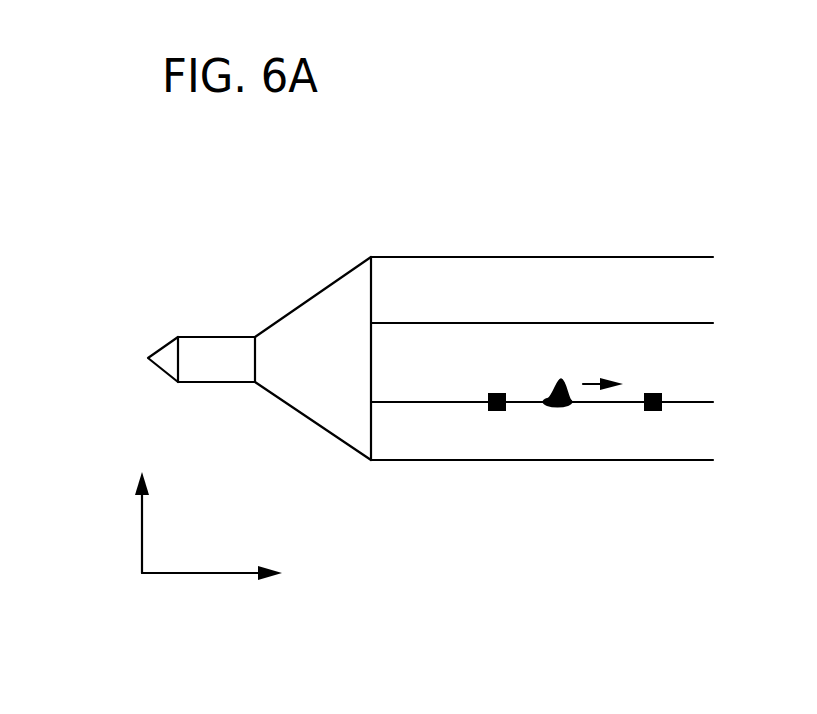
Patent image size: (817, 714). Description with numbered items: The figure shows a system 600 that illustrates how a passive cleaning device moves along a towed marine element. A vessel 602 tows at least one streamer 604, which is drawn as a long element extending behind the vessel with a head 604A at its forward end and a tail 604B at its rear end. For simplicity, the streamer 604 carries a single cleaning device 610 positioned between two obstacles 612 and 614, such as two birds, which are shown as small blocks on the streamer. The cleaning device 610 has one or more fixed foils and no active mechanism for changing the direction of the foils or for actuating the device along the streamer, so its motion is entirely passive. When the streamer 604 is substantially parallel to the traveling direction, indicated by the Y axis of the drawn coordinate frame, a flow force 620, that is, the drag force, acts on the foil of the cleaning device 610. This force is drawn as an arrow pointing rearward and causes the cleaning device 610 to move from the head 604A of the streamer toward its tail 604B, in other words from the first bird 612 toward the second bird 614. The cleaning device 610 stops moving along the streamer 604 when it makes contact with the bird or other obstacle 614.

The system 600 is at (492, 136).
The vessel 602 is at (208, 337).
The streamer 604 is at (703, 401).
The head of the streamer 604A is at (372, 373).
The tail of the streamer 604B is at (687, 401).
The cleaning device 610 is at (557, 408).
The obstacle (bird) 612 is at (497, 411).
The obstacle (bird) 614 is at (653, 411).
The flow force 620 is at (583, 384).